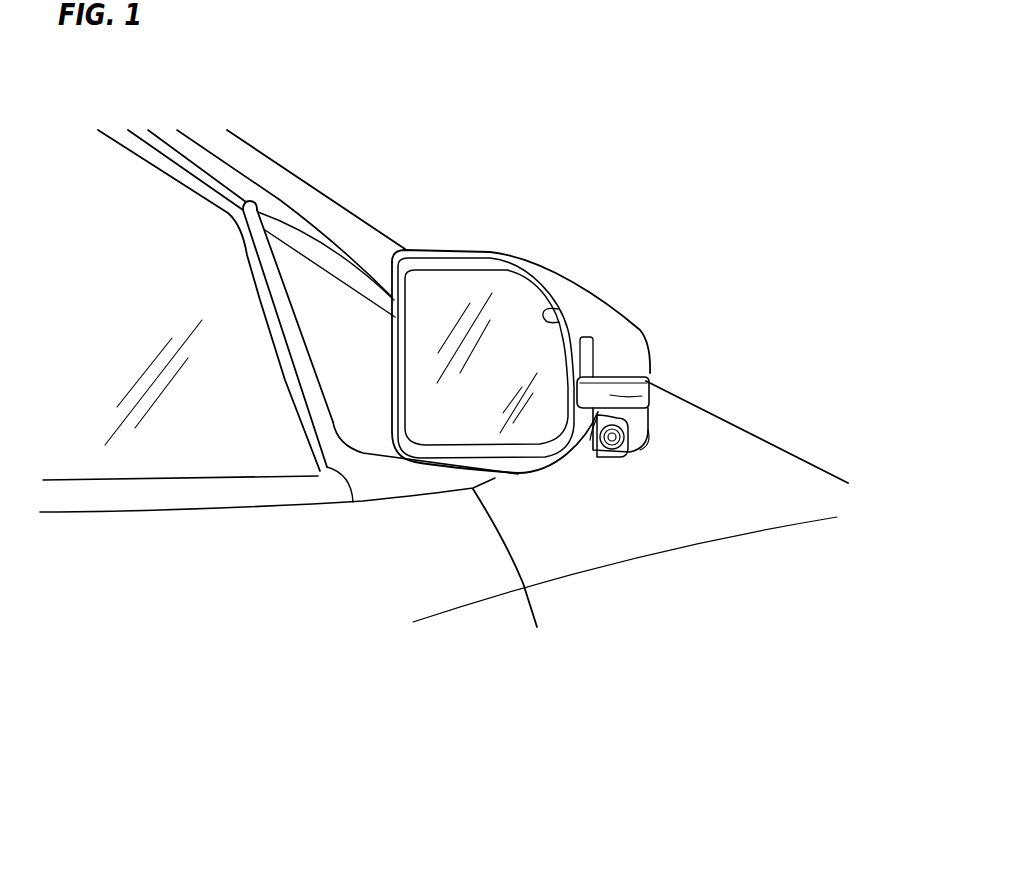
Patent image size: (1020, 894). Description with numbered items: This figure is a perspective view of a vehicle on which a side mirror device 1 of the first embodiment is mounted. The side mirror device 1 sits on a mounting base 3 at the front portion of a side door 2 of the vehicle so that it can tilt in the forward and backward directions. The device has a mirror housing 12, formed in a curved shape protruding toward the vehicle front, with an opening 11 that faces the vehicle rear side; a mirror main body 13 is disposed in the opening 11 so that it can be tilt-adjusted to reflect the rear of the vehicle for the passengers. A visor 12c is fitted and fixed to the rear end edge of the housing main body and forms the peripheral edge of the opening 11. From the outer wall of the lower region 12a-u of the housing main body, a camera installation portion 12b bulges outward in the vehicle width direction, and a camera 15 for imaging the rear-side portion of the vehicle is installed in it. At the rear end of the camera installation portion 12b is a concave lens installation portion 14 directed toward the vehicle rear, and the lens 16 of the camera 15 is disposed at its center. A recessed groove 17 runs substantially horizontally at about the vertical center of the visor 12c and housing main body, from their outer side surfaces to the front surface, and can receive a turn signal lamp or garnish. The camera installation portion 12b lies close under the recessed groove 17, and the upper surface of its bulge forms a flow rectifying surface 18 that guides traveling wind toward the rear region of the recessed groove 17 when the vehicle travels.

The side mirror device 1 is at (592, 265).
The side door 2 is at (278, 555).
The mounting base 3 is at (320, 300).
The opening 11 is at (558, 322).
The mirror housing 12 is at (645, 335).
The lower region of the housing main body 12a-u is at (632, 417).
The camera installation portion 12b is at (637, 453).
The visor 12c is at (538, 273).
The mirror main body 13 is at (452, 292).
The lens installation portion 14 is at (602, 420).
The camera 15 is at (612, 472).
The lens 16 is at (610, 442).
The recessed groove 17 is at (610, 393).
The flow rectifying surface 18 is at (637, 442).